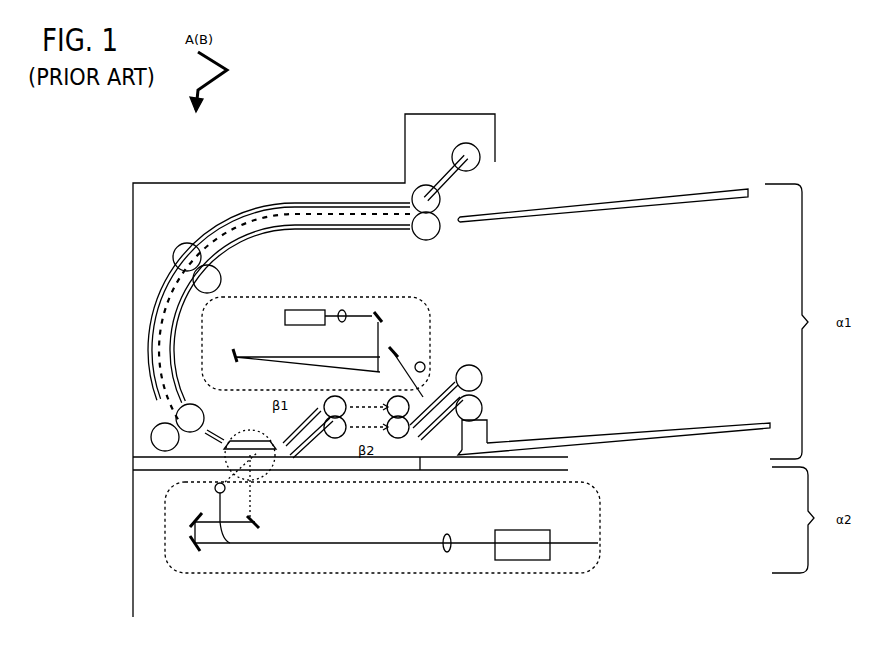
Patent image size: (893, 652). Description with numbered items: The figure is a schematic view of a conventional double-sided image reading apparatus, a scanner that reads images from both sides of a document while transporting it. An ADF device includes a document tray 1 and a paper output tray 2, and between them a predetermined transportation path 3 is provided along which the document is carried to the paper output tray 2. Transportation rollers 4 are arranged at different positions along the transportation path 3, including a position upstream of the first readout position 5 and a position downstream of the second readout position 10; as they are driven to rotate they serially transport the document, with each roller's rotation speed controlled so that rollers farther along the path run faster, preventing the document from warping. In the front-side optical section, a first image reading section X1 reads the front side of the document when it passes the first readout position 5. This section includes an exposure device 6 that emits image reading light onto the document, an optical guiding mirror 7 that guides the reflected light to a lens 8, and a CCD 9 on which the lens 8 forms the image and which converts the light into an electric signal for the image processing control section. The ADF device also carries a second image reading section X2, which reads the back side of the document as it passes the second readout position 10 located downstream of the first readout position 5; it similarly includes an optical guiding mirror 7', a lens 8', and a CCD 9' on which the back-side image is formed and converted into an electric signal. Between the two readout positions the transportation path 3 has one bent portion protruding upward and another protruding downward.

The document tray 1 is at (541, 208).
The paper output tray 2 is at (557, 440).
The transportation path 3 is at (318, 203).
The transportation rollers 4 is at (190, 243).
The first readout position 5 is at (250, 438).
The exposure device 6 is at (419, 362).
The optical guiding mirror 7 is at (391, 449).
The lens 8 is at (443, 572).
The CCD 9 is at (522, 570).
The second readout position 10 is at (420, 471).
The optical guiding mirror 7' is at (397, 328).
The lens 8' is at (348, 291).
The CCD 9' is at (305, 292).
The first image reading section X1 is at (600, 527).
The second image reading section X2 is at (430, 340).